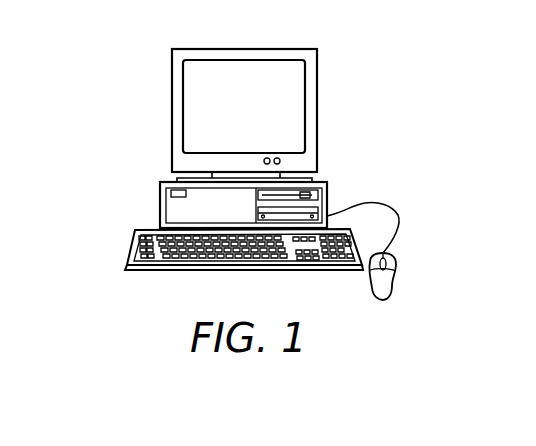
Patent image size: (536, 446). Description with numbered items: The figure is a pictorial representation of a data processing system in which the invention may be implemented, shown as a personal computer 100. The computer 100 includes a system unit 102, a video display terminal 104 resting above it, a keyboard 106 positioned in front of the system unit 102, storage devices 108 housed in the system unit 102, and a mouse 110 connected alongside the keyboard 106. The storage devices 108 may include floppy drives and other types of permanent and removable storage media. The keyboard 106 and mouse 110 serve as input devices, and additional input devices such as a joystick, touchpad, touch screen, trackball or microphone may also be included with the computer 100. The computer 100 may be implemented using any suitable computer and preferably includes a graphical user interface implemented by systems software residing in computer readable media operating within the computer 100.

The computer 100 is at (112, 102).
The system unit 102 is at (160, 200).
The video display terminal 104 is at (317, 110).
The keyboard 106 is at (155, 271).
The storage devices 108 is at (305, 198).
The mouse 110 is at (380, 299).